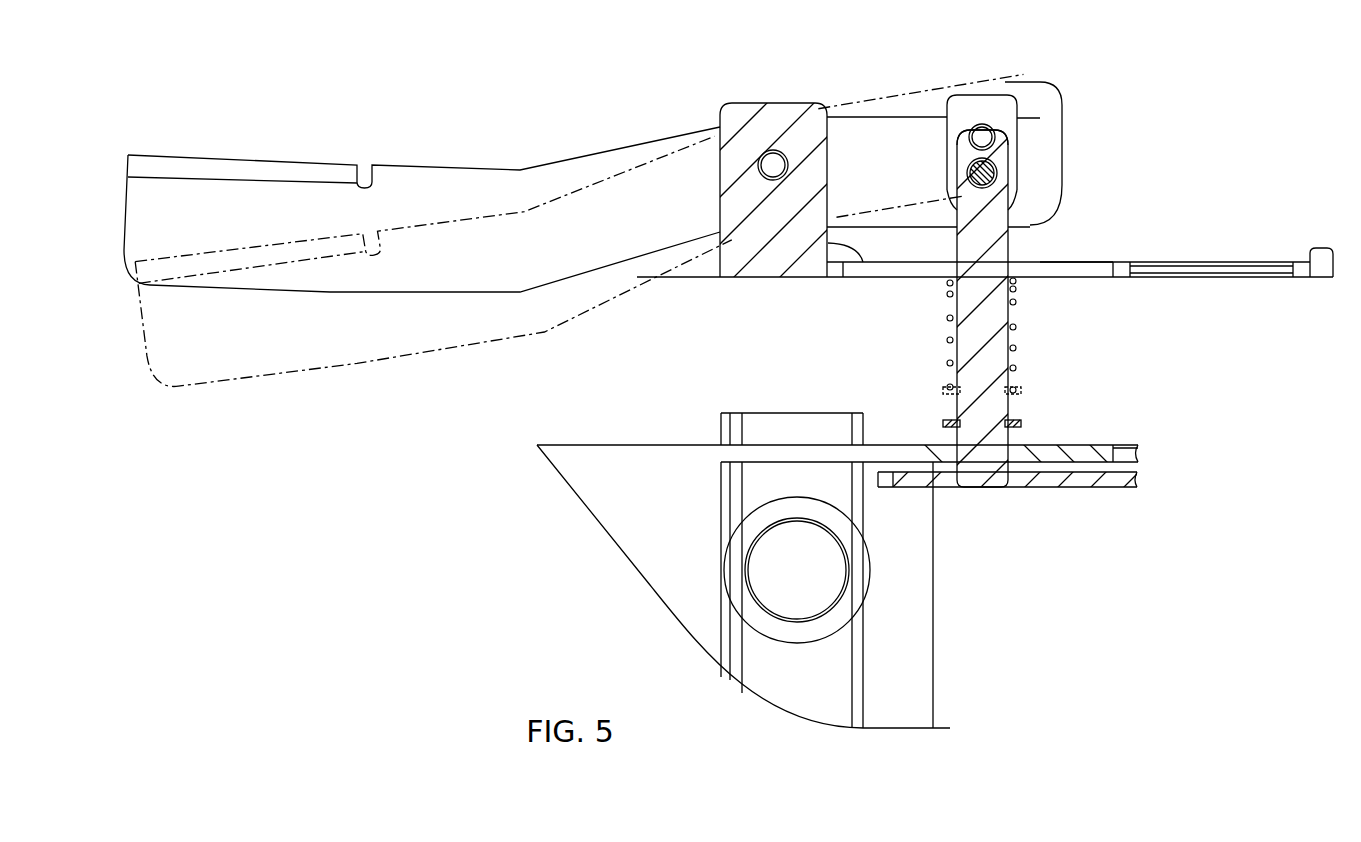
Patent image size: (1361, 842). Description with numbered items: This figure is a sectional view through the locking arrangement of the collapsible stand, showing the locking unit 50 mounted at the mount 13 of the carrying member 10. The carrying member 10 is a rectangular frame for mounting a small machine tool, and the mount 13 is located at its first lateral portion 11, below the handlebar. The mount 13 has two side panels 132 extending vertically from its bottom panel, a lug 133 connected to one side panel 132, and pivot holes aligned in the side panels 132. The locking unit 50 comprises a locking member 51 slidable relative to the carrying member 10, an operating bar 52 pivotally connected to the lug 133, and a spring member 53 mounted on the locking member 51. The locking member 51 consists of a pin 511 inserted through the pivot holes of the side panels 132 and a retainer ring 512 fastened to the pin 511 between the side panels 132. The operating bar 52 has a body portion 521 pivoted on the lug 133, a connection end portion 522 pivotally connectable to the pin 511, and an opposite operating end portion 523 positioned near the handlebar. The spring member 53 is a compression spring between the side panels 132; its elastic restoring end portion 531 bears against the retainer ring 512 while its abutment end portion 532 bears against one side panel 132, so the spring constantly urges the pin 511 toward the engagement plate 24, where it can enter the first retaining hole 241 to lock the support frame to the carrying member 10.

The carrying member 10 is at (944, 644).
The first lateral portion 11 is at (910, 550).
The mount 13 is at (1092, 270).
The side panel 132 is at (1053, 265).
The lug 133 is at (737, 122).
The engagement plate 24 is at (1103, 482).
The first retaining hole 241 is at (1010, 488).
The locking unit 50 is at (496, 160).
The locking member 51 is at (973, 332).
The pin 511 is at (982, 137).
The retainer ring 512 is at (947, 388).
The operating bar 52 is at (900, 143).
The body portion 521 is at (773, 162).
The connection end portion 522 is at (1028, 147).
The operating end portion 523 is at (247, 167).
The spring member 53 is at (1016, 300).
The elastic restoring end portion 531 is at (1013, 419).
The abutment end portion 532 is at (943, 281).